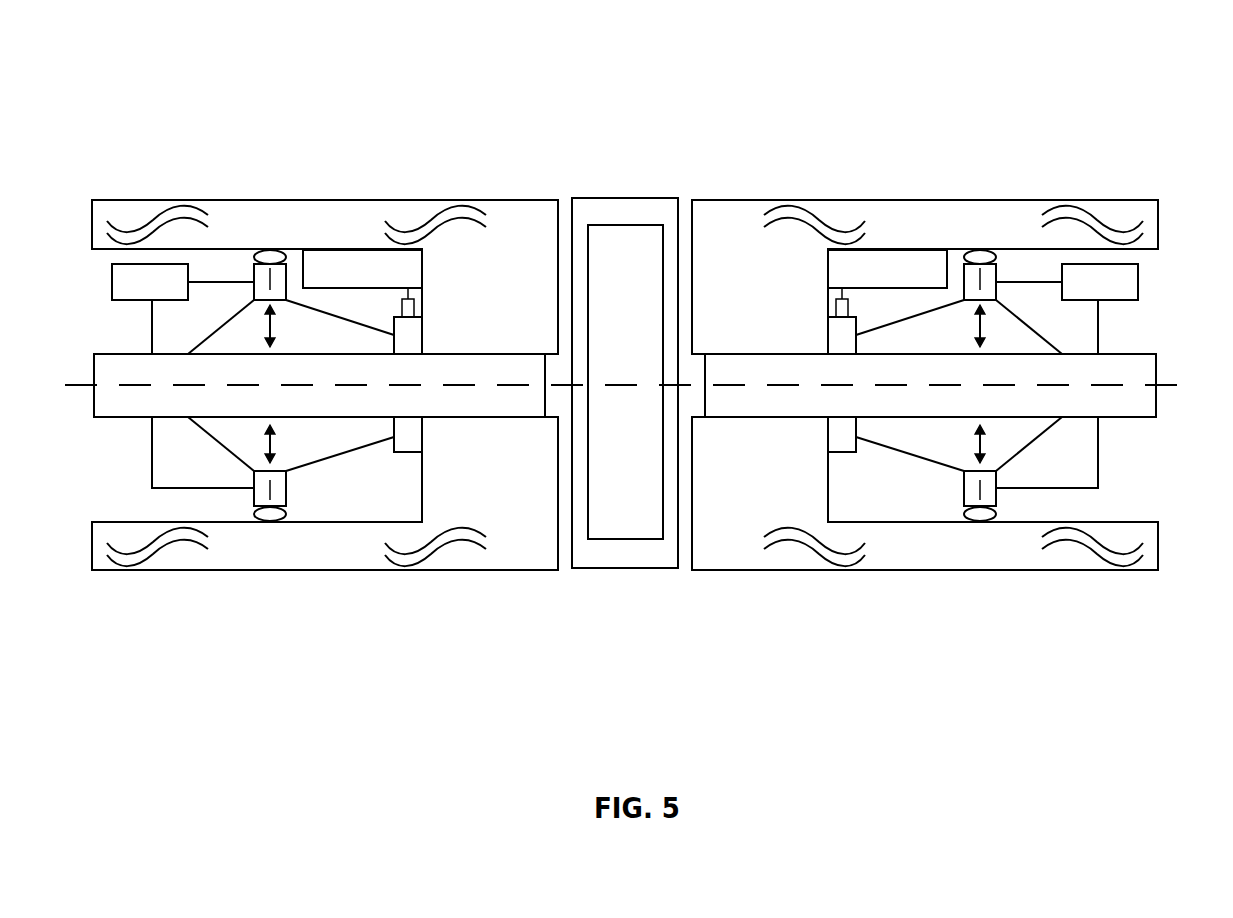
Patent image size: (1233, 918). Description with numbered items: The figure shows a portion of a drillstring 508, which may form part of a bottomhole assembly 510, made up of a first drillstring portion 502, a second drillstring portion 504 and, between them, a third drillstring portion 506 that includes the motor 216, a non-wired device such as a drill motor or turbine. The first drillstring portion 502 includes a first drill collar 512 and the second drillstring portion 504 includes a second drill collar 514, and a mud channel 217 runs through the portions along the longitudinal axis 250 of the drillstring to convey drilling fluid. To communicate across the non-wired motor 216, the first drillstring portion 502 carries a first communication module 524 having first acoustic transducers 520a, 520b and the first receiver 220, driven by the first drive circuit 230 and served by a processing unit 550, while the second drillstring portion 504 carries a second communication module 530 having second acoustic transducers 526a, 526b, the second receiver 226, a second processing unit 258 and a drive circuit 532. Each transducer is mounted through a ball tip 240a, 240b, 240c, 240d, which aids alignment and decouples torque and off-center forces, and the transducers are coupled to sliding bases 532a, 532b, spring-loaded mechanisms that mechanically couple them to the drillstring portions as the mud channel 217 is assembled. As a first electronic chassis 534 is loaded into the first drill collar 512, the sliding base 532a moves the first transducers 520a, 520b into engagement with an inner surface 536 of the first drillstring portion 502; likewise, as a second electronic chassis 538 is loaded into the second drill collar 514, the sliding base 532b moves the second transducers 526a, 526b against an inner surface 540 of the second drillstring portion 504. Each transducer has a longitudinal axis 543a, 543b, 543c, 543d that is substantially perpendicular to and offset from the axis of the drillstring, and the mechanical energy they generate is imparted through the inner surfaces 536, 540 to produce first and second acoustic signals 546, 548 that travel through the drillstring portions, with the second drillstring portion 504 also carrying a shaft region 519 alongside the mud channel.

The motor 216 is at (653, 532).
The mud channel 217 is at (118, 408).
The first receiver 220 is at (422, 316).
The second receiver 226 is at (837, 312).
The first drive circuit 230 is at (128, 302).
The ball tip 240a is at (256, 256).
The ball tip 240b is at (290, 511).
The ball tip 240c is at (998, 258).
The ball tip 240d is at (1002, 512).
The longitudinal axis of the drillstring 250 is at (93, 385).
The second processing unit 258 is at (837, 262).
The first drillstring portion 502 is at (289, 571).
The second drillstring portion 504 is at (775, 563).
The third drillstring portion 506 is at (587, 572).
The drillstring 508 is at (250, 64).
The bottomhole assembly 510 is at (420, 54).
The first drill collar 512 is at (541, 562).
The second drill collar 514 is at (720, 202).
The second shaft 519 is at (1112, 410).
The first acoustic transducer 520a is at (264, 284).
The first acoustic transducer 520b is at (264, 490).
The first communication module 524 is at (252, 183).
The second acoustic transducer 526a is at (997, 292).
The second acoustic transducer 526b is at (963, 484).
The second communication module 530 is at (958, 203).
The second drive circuit 532 is at (1128, 302).
The sliding base 532a is at (408, 346).
The sliding base 532b is at (840, 345).
The first electronic chassis 534 is at (327, 514).
The inner surface of the first drillstring portion 536 is at (118, 251).
The second electronic chassis 538 is at (882, 514).
The inner surface of the second drillstring portion 540 is at (1134, 251).
The longitudinal axis of acoustic transducer 543a is at (270, 250).
The longitudinal axis of acoustic transducer 543b is at (268, 523).
The longitudinal axis of acoustic transducer 543c is at (980, 250).
The longitudinal axis of acoustic transducer 543d is at (982, 523).
The first acoustic signal 546 is at (182, 200).
The second acoustic signal 548 is at (842, 201).
The first processing unit 550 is at (422, 280).